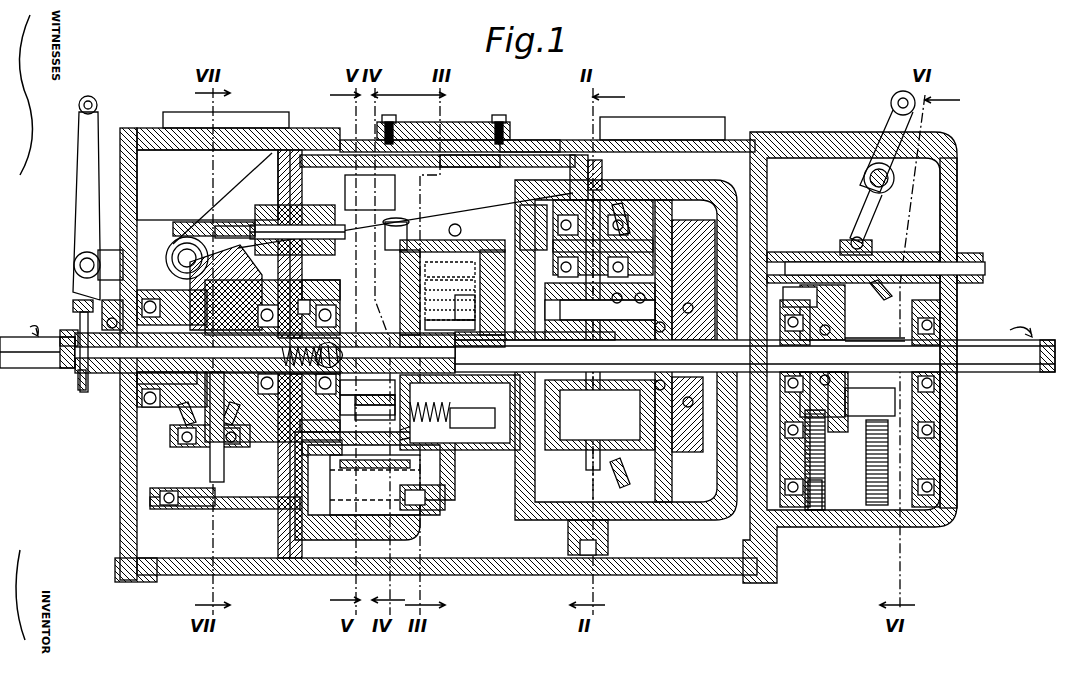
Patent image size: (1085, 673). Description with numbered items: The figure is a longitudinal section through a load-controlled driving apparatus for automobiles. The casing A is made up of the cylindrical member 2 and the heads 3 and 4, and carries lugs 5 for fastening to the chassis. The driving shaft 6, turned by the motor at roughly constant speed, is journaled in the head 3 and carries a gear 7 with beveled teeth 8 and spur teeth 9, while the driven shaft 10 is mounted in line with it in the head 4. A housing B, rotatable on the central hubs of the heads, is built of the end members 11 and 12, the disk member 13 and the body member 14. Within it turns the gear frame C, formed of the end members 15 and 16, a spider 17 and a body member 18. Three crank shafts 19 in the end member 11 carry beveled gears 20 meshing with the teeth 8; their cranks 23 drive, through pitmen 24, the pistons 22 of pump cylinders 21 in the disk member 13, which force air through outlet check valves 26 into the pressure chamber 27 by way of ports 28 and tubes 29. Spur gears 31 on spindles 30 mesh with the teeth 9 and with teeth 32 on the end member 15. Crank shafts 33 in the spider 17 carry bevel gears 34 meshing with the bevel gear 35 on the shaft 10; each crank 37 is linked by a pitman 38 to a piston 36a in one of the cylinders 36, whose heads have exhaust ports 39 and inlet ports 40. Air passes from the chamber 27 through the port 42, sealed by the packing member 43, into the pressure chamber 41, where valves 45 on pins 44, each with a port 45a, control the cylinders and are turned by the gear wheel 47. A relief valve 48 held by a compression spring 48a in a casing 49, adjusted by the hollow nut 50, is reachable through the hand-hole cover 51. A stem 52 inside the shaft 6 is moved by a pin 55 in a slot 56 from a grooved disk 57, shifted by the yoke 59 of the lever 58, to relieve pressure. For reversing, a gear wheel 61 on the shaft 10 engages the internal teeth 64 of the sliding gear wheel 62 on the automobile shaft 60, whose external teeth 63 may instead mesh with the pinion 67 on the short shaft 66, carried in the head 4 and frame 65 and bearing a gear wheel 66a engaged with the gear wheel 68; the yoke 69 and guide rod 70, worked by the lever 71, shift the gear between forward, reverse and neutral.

The cylindrical member 2 is at (660, 146).
The head 3 is at (120, 526).
The head 4 is at (767, 204).
The lugs 5 is at (252, 122).
The driving shaft 6 is at (37, 341).
The gear 7 is at (260, 236).
The beveled teeth 8 is at (235, 220).
The spur teeth 9 is at (240, 455).
The driven shaft 10 is at (755, 356).
The end member 11 is at (270, 186).
The end member 12 is at (626, 341).
The disk member 13 is at (292, 160).
The body member 14 is at (451, 177).
The end member 15 is at (349, 347).
The end member 16 is at (672, 244).
The spider 17 is at (522, 219).
The body member 18 is at (497, 284).
The crank shafts 19 is at (205, 433).
The beveled gear 20 is at (168, 458).
The pump cylinders 21 is at (375, 545).
The pistons 22 is at (330, 545).
The cranks 23 is at (180, 266).
The pitmen 24 is at (173, 232).
The outlet check valve 26 is at (425, 510).
The pressure chamber 27 is at (321, 286).
The ports 28 is at (353, 354).
The tubes 29 is at (456, 224).
The spindles 30 is at (370, 192).
The spur gears 31 is at (301, 211).
The teeth 32 is at (315, 385).
The crank shafts 33 is at (600, 215).
The bevel gear 34 is at (630, 212).
The bevel gear 35 is at (672, 218).
The cylinders 36 is at (460, 338).
The piston 36a is at (535, 345).
The crank 37 is at (590, 345).
The pitman 38 is at (587, 447).
The exhaust ports 39 is at (396, 234).
The inlet ports 40 is at (450, 322).
The pressure chamber 41 is at (430, 399).
The port 42 is at (366, 393).
The packing member 43 is at (338, 340).
The pins 44 is at (440, 300).
The valves 45 is at (440, 279).
The port 45a is at (451, 307).
The gear wheel 47 is at (375, 401).
The relief valve 48 is at (375, 413).
The compression spring 48a is at (410, 435).
The casing 49 is at (430, 440).
The hollow nut 50 is at (478, 428).
The hand-hole cover 51 is at (460, 126).
The stem 52 is at (137, 410).
The pin 55 is at (80, 370).
The slot 56 is at (78, 342).
The grooved disk 57 is at (80, 318).
The lever 58 is at (80, 228).
The yoke 59 is at (55, 379).
The automobile shaft 60 is at (990, 348).
The gear wheel 61 is at (814, 351).
The gear wheel 62 is at (840, 248).
The external teeth 63 is at (840, 430).
The internal teeth 64 is at (861, 402).
The frame 65 is at (957, 212).
The short shaft 66 is at (940, 452).
The gear wheel 66a is at (815, 510).
The pinion 67 is at (877, 505).
The gear wheel 68 is at (875, 329).
The yoke 69 is at (883, 296).
The guide rod 70 is at (910, 262).
The lever 71 is at (890, 122).
The casing A is at (540, 146).
The housing B is at (470, 173).
The gear frame C is at (452, 287).